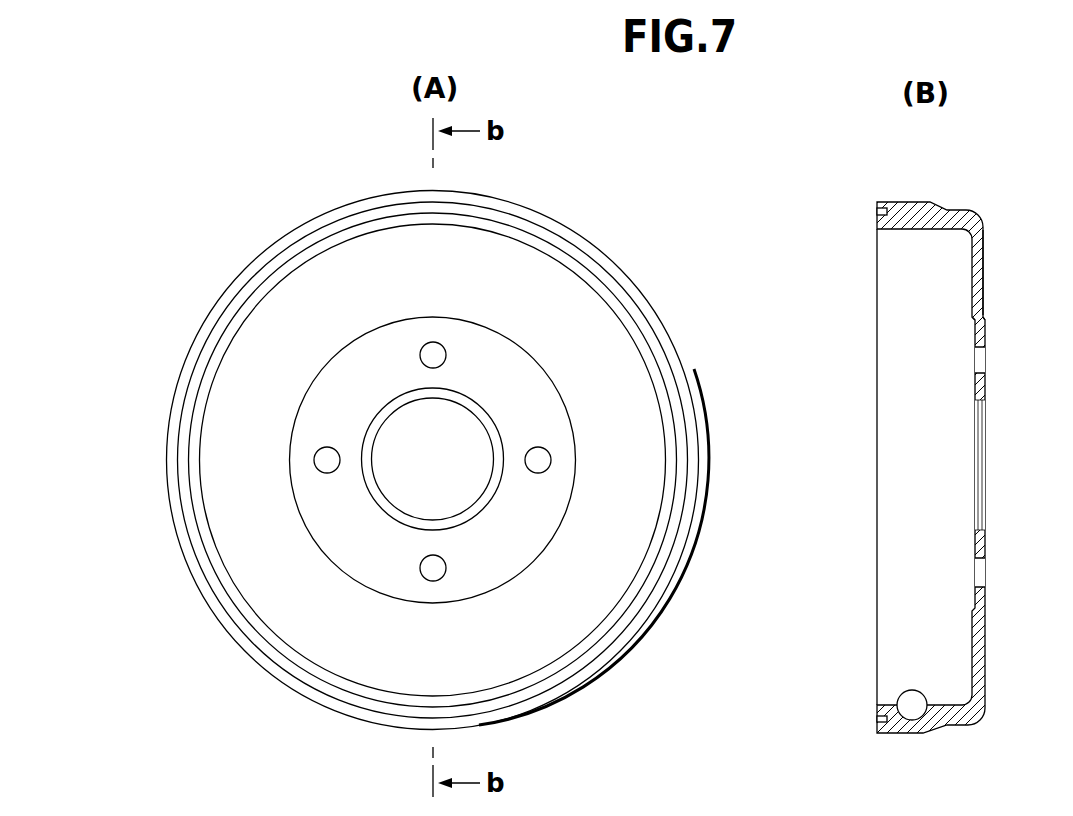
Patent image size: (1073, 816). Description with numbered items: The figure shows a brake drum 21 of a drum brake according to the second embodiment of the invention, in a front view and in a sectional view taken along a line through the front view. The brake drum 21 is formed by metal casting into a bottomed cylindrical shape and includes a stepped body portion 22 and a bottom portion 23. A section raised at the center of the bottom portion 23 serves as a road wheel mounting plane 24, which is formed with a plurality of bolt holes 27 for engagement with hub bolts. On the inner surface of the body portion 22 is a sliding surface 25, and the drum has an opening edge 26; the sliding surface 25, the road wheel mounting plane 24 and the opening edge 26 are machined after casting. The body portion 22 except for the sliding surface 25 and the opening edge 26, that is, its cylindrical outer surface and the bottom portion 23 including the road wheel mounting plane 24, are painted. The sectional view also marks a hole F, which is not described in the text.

The brake drum 21 is at (242, 706).
The stepped body portion 22 is at (596, 251).
The bottom portion 23 is at (983, 258).
The road wheel mounting plane 24 is at (985, 335).
The sliding surface 25 is at (530, 249).
The opening edge 26 is at (684, 532).
The bolt holes 27 is at (446, 355).
The hole F is at (925, 695).